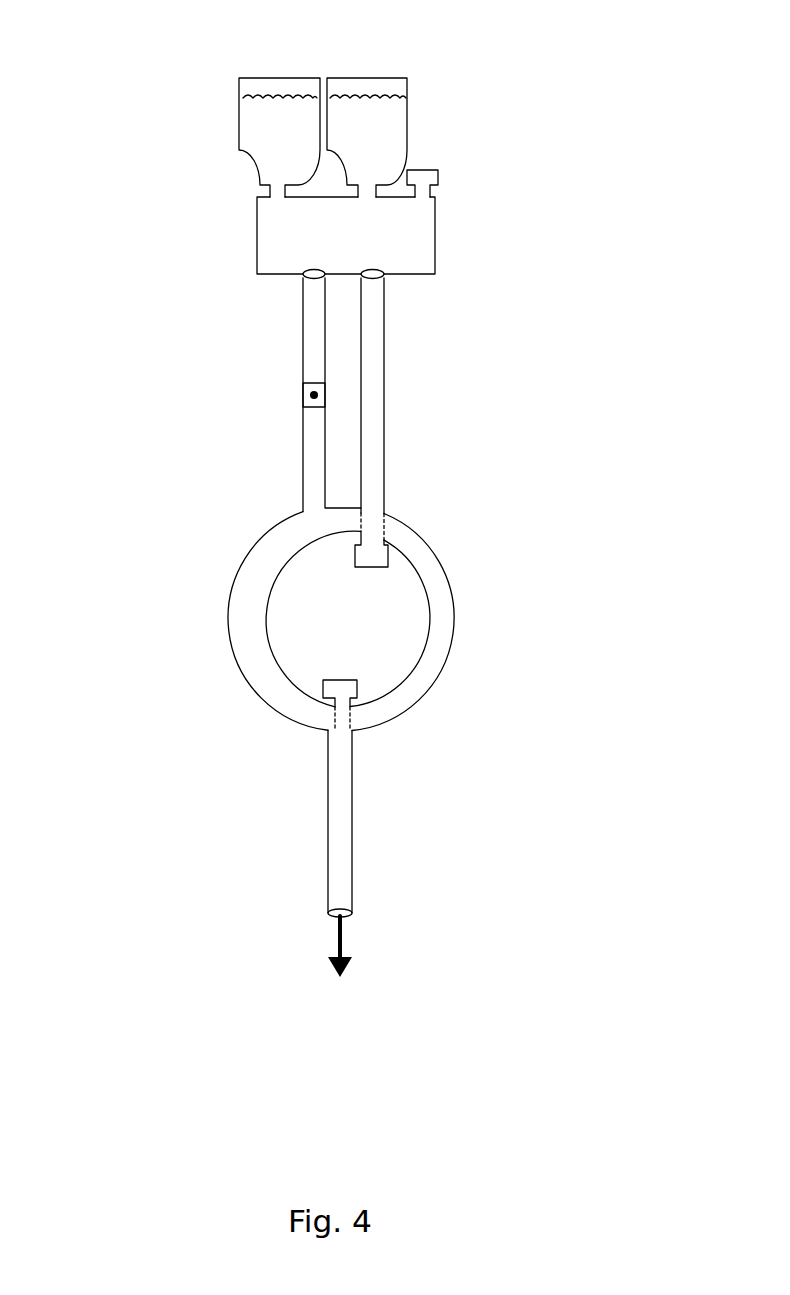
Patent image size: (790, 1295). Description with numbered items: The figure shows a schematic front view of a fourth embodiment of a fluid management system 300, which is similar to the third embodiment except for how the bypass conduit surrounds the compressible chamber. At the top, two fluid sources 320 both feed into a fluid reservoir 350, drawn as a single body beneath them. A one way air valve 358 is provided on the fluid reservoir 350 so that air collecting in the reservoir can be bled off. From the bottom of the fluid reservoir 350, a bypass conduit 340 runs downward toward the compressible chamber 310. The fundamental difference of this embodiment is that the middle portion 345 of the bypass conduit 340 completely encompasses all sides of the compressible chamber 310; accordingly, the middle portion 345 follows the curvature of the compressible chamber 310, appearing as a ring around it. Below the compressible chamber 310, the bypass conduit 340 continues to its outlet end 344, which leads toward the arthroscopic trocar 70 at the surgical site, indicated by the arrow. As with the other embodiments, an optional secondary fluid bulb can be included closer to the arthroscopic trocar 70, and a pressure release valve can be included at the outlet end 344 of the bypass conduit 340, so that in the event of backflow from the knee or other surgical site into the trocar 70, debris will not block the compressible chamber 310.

The fluid management system 300 is at (152, 72).
The fluid source 320 is at (240, 157).
The one way air valve 358 is at (438, 177).
The fluid reservoir 350 is at (415, 238).
The bypass conduit 340 is at (313, 357).
The middle portion 345 is at (443, 575).
The compressible chamber 310 is at (303, 652).
The outlet end 344 is at (342, 843).
The arthroscopic trocar 70 is at (342, 933).